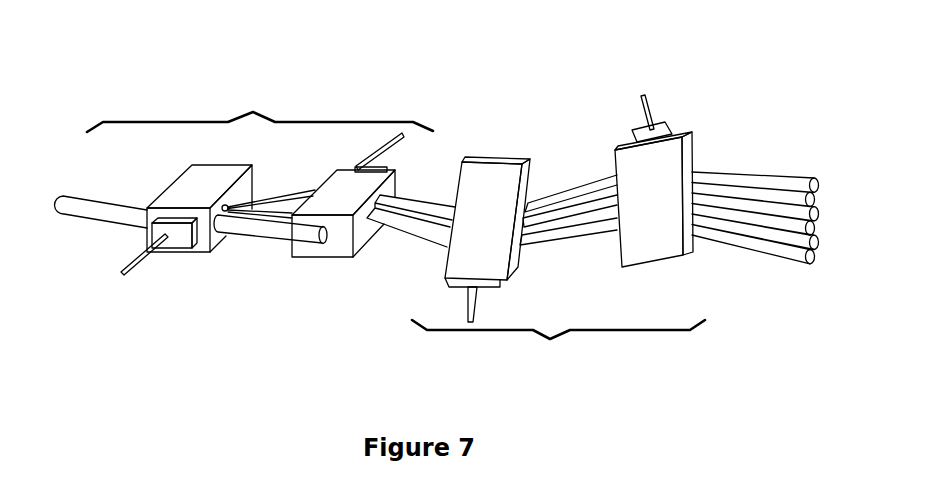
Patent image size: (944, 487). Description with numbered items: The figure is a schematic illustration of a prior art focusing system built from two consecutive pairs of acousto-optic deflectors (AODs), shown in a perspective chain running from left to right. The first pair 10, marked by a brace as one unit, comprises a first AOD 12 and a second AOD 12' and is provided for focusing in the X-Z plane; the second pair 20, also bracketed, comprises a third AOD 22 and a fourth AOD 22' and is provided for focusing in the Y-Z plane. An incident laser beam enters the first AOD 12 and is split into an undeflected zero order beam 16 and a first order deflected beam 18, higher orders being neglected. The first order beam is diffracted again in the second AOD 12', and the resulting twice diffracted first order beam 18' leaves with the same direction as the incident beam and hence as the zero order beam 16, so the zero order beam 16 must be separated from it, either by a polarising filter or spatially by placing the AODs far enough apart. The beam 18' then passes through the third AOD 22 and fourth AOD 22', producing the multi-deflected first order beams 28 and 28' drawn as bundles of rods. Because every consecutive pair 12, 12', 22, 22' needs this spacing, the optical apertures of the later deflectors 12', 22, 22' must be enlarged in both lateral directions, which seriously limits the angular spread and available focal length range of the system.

The first pair of AODs 10 is at (347, 122).
The first AOD 12 is at (153, 252).
The second AOD 12' is at (348, 240).
The zero order beam 16 is at (268, 233).
The first order deflected beam 18 is at (268, 176).
The twice diffracted first order beam 18' is at (414, 193).
The second pair of AODs 20 is at (683, 337).
The third AOD 22 is at (494, 203).
The fourth AOD 22' is at (664, 170).
The multi-deflected first order beam 28 is at (568, 189).
The multi-deflected first order beam 28' is at (755, 187).